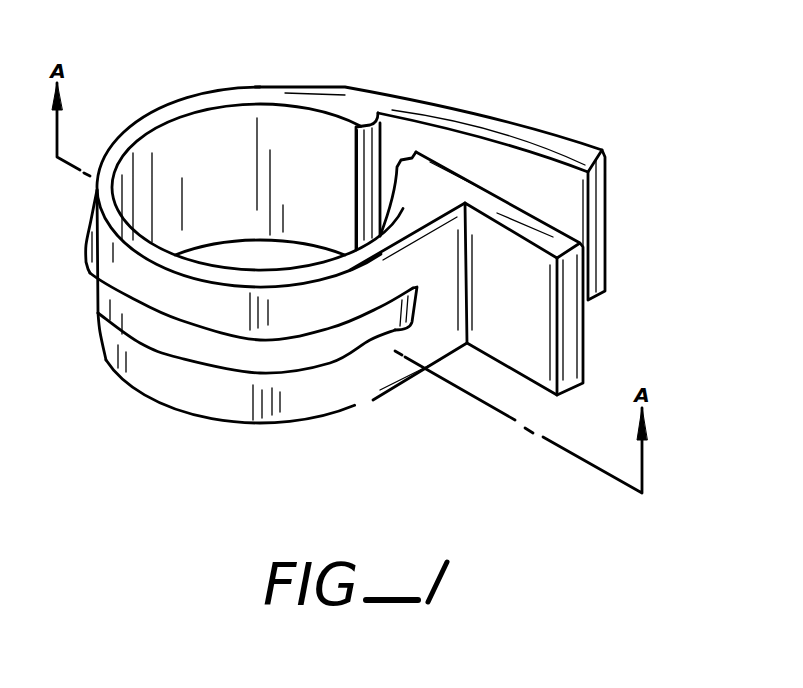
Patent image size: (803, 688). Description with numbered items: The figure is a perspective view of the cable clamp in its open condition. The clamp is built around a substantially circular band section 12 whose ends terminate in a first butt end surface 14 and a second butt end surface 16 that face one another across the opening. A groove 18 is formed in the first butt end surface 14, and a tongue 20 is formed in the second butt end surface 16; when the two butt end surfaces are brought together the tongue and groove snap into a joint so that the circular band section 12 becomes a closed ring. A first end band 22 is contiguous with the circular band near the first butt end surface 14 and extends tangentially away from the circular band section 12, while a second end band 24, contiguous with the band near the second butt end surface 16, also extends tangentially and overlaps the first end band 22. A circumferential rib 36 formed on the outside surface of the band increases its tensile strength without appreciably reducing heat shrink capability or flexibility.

The circular band section 12 is at (163, 375).
The first butt end surface 14 is at (417, 152).
The second butt end surface 16 is at (357, 182).
The groove 18 is at (410, 173).
The tongue 20 is at (372, 115).
The first end band 22 is at (508, 308).
The second end band 24 is at (565, 150).
The circumferential rib 36 is at (243, 352).